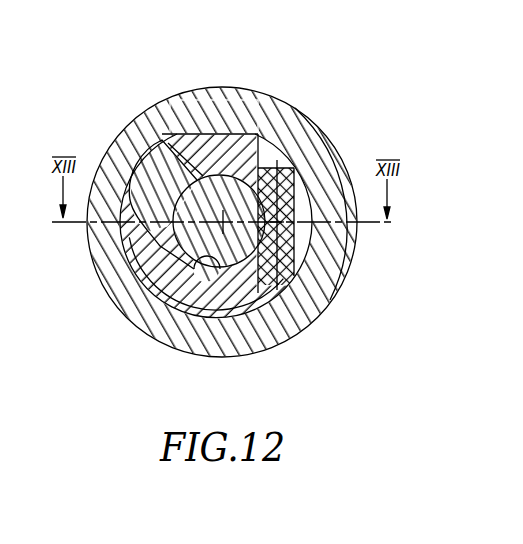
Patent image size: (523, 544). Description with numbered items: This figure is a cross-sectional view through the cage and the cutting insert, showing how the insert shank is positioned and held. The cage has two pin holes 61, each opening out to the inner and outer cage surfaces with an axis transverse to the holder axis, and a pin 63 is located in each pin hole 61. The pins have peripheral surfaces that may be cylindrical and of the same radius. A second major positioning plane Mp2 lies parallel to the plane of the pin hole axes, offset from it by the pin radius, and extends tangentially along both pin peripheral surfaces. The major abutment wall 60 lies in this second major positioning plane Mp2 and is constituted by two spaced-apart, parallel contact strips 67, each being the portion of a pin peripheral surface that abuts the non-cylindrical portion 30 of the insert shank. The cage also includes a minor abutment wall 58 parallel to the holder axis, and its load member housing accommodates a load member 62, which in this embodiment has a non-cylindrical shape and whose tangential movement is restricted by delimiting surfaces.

The contact strip 67 is at (222, 198).
The major abutment wall 60 is at (202, 90).
The load member 62 is at (129, 147).
The non-cylindrical portion 30 is at (282, 168).
The pin 63 is at (288, 262).
The minor abutment wall 58 is at (203, 313).
The pin hole 61 is at (262, 297).
The second major positioning plane Mp2 is at (165, 258).